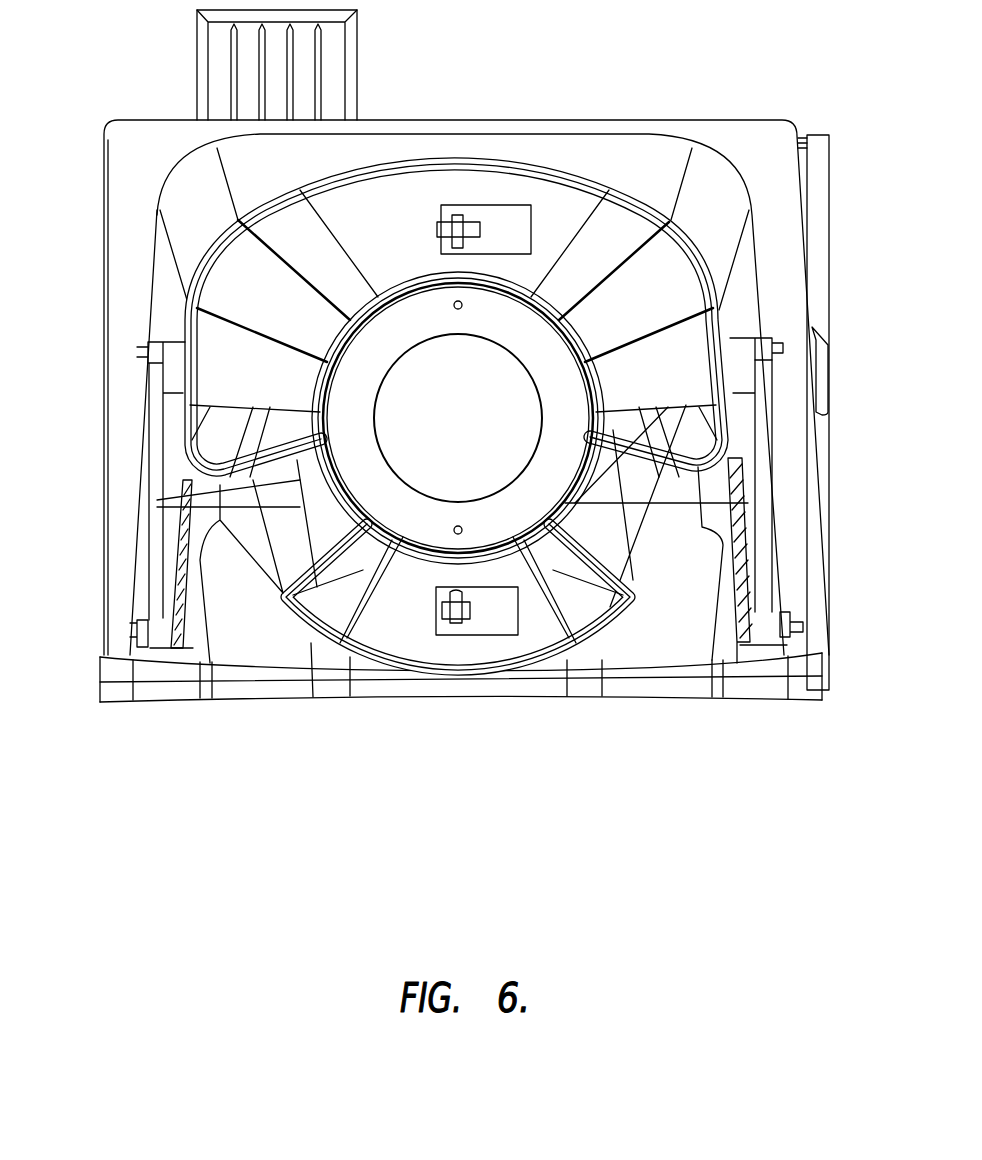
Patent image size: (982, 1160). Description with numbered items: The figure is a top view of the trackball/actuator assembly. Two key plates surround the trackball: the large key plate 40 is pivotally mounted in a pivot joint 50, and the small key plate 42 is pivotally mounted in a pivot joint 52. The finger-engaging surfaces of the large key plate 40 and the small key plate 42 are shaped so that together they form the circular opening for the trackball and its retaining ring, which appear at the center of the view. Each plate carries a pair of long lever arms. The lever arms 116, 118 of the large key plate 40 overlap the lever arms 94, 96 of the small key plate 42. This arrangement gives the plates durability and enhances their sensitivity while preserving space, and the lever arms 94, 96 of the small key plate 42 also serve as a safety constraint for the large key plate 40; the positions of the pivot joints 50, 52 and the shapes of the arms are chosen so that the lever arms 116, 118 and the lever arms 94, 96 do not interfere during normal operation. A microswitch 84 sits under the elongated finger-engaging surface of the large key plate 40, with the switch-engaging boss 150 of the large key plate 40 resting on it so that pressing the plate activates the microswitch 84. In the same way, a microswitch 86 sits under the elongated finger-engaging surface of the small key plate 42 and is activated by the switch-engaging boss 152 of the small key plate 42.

The large key plate 40 is at (630, 218).
The small key plate 42 is at (598, 637).
The pivot joint 50 is at (803, 626).
The pivot joint 52 is at (785, 348).
The microswitch 84 is at (503, 205).
The microswitch 86 is at (478, 635).
The lever arm 94 is at (767, 433).
The lever arm 96 is at (160, 428).
The lever arm 116 is at (772, 558).
The lever arm 118 is at (145, 567).
The switch-engaging boss 150 is at (437, 226).
The switch-engaging boss 152 is at (437, 597).